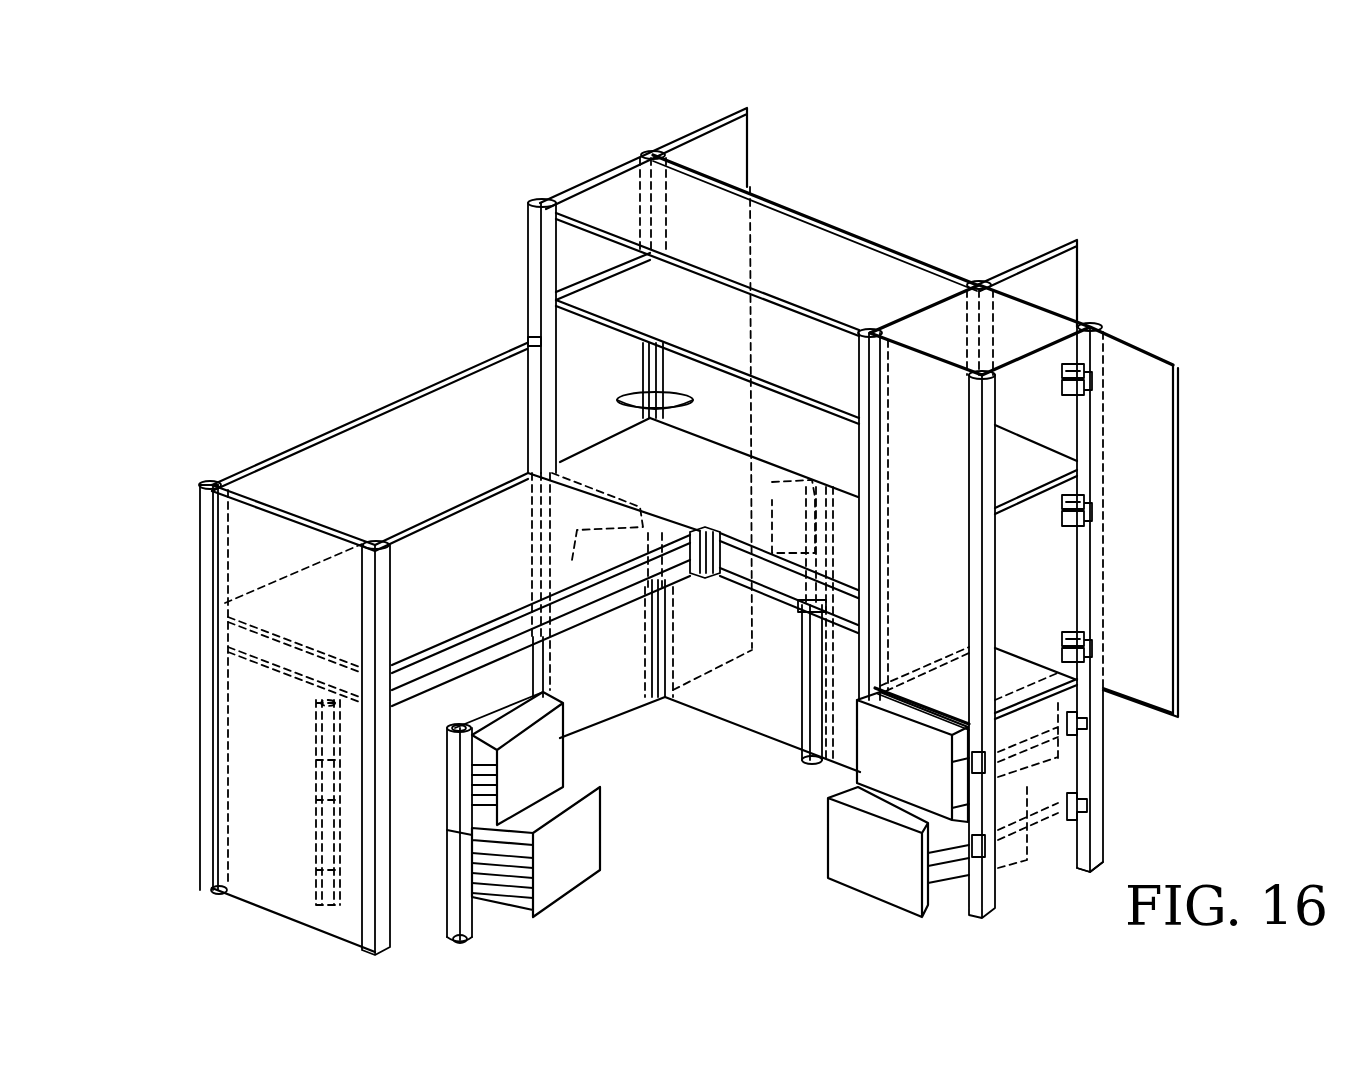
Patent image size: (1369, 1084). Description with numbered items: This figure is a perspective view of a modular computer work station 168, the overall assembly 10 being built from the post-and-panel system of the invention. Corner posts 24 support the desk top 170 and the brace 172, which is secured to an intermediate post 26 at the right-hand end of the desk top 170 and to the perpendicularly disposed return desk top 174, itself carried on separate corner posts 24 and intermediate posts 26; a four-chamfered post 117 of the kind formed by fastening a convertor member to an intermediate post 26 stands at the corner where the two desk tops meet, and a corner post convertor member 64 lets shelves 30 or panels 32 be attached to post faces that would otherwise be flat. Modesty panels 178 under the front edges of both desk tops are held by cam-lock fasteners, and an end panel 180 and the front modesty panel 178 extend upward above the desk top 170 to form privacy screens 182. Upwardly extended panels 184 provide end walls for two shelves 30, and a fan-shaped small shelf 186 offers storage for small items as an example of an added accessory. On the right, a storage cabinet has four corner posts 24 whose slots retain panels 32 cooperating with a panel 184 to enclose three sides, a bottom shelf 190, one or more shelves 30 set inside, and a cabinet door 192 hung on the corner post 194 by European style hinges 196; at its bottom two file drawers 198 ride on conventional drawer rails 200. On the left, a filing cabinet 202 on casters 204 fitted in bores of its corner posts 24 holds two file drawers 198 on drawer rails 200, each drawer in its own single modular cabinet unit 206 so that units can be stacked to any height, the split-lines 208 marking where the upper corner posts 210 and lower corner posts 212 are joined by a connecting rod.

The modular furniture system 10 is at (342, 308).
The corner post 24 is at (978, 282).
The intermediate post 26 is at (527, 335).
The shelf 30 is at (805, 212).
The panel 32 is at (1040, 303).
The corner post convertor member 64 is at (668, 653).
The four-chamfered post 117 is at (730, 528).
The work station 168 is at (238, 465).
The desk top 170 is at (483, 582).
The brace 172 is at (527, 505).
The return desk top 174 is at (680, 468).
The modesty panel 178 is at (592, 727).
The end panel 180 is at (252, 905).
The privacy screen 182 is at (330, 430).
The upwardly extended panel 184 is at (600, 182).
The fan-shaped small shelf 186 is at (628, 400).
The bottom shelf 190 is at (1097, 693).
The cabinet door 192 is at (1177, 410).
The corner post 194 is at (1107, 860).
The European style hinge 196 is at (1093, 378).
The file drawer 198 is at (567, 763).
The drawer rail 200 is at (1060, 753).
The filing cabinet 202 is at (607, 843).
The caster 204 is at (320, 913).
The modular cabinet unit 206 is at (443, 783).
The split-line 208 is at (327, 810).
The upper corner post 210 is at (447, 747).
The lower corner post 212 is at (467, 885).